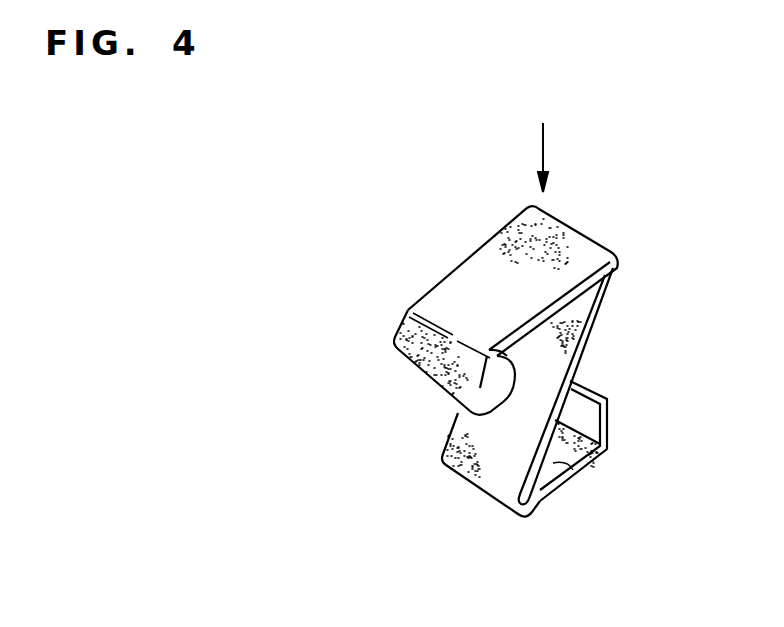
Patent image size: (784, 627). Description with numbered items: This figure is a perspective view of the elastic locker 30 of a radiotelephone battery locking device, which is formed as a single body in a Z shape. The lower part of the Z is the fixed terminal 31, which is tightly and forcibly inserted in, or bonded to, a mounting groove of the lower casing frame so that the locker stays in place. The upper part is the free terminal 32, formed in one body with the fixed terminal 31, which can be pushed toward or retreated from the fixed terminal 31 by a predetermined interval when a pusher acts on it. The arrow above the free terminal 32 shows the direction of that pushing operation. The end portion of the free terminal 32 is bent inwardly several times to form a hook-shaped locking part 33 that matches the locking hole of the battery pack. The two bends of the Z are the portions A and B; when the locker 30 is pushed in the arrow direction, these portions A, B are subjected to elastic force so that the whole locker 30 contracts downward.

The elastic locker 30 is at (407, 250).
The fixed terminal 31 is at (577, 480).
The free terminal 32 is at (491, 233).
The locking part 33 is at (437, 387).
The portion A is at (607, 277).
The portion B is at (530, 497).